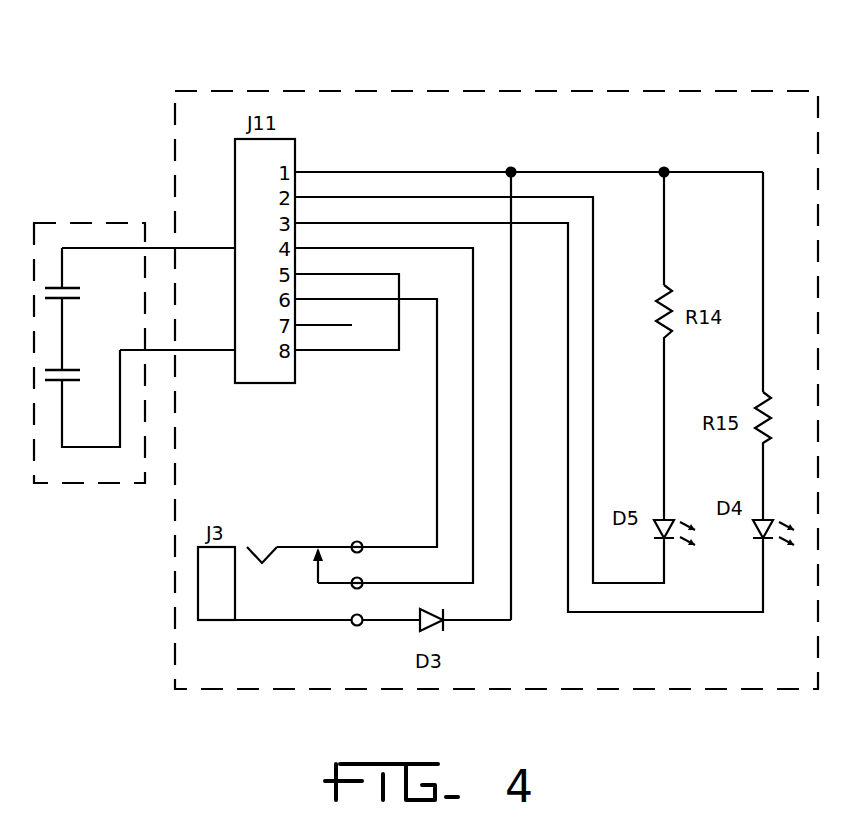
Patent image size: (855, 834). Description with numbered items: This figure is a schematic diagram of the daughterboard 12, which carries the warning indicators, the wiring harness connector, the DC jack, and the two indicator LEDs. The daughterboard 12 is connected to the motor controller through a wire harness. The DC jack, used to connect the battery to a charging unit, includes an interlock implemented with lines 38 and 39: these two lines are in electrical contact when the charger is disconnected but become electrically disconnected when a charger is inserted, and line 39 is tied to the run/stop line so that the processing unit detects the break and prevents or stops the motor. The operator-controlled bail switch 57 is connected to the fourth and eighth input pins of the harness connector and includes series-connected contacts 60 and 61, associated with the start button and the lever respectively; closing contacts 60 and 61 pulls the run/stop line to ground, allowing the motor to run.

The daughterboard 12 is at (512, 80).
The line 38 is at (333, 545).
The line 39 is at (333, 582).
The bail switch 57 is at (89, 389).
The contact 60 is at (74, 288).
The contact 61 is at (67, 370).